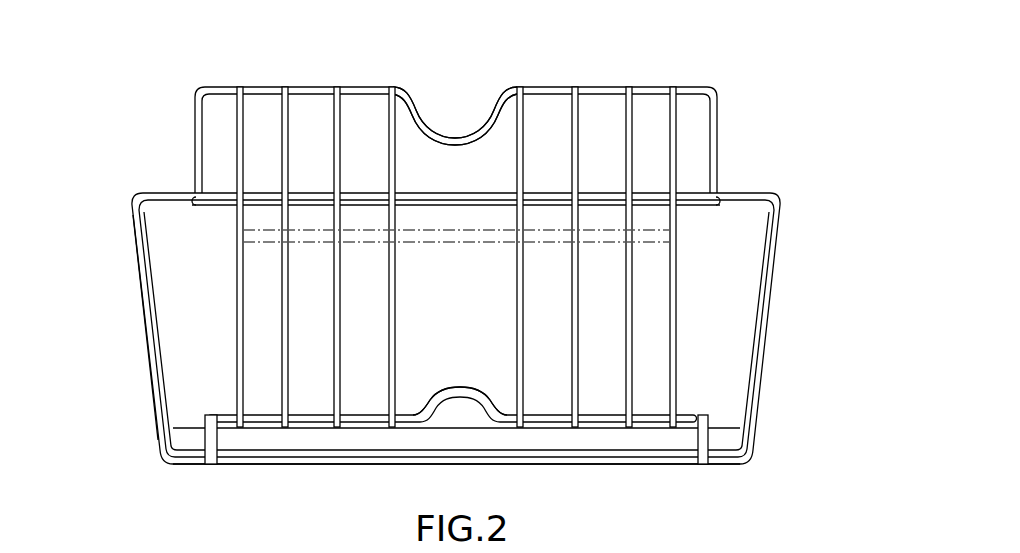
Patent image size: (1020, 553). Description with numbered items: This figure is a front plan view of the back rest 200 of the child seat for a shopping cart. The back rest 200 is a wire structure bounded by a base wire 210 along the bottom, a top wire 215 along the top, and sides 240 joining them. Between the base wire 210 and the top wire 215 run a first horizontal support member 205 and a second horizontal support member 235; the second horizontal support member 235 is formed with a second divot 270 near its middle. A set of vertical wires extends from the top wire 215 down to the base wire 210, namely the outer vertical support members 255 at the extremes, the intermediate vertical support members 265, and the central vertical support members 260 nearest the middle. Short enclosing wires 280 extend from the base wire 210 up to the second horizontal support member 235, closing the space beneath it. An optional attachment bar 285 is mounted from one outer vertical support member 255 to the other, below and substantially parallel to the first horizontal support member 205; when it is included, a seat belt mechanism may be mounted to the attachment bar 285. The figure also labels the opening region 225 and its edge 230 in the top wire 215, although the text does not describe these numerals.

The back rest 200 is at (758, 77).
The first horizontal support member 205 is at (212, 206).
The base wire 210 is at (563, 458).
The top wire 215 is at (317, 86).
The notch 225 is at (443, 108).
The notch edge 230 is at (457, 130).
The second horizontal support member 235 is at (232, 417).
The sides 240 is at (148, 315).
The outer vertical support members 255 is at (233, 352).
The central vertical support members 260 is at (523, 330).
The intermediate vertical support members 265 is at (632, 288).
The second divot 270 is at (468, 393).
The enclosing wires 280 is at (702, 438).
The attachment bar 285 is at (482, 243).